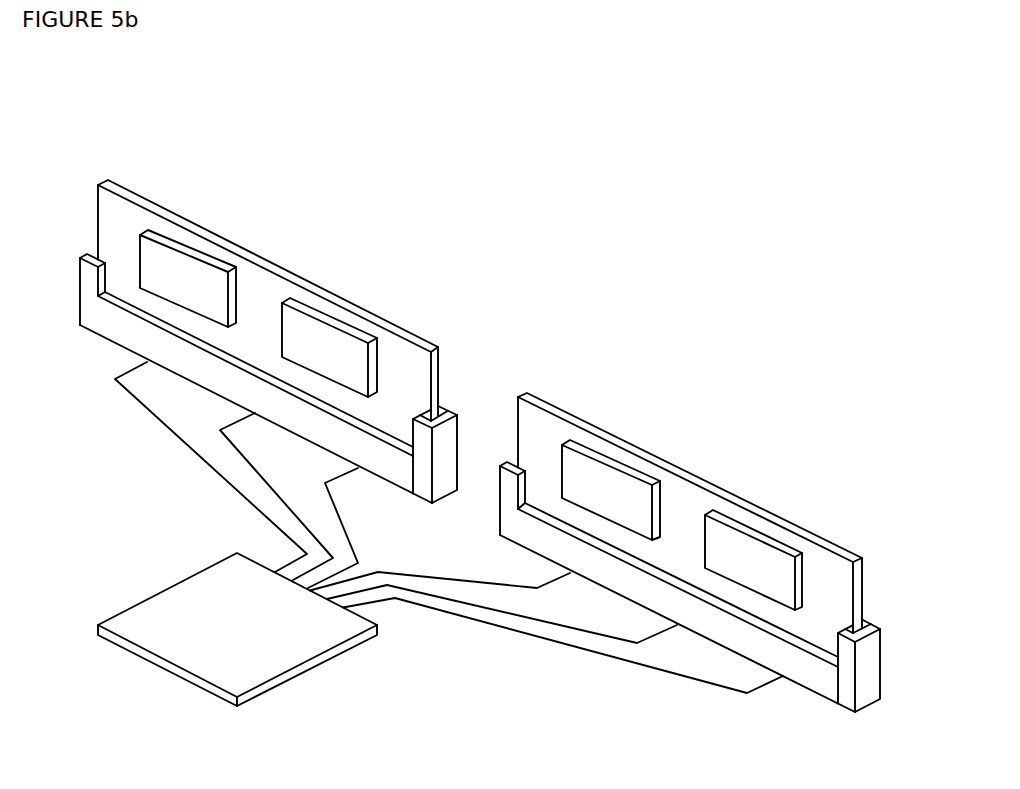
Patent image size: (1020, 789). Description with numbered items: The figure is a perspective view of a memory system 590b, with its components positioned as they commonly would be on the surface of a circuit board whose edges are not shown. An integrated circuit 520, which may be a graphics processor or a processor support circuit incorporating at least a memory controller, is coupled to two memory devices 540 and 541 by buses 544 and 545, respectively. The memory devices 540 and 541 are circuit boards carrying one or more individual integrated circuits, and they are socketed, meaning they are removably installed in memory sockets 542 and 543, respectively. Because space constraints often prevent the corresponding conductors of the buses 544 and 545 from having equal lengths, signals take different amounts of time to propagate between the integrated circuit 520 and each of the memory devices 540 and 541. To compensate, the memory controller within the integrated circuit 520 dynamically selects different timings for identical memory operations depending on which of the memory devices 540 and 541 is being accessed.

The memory system 590b is at (119, 124).
The memory device 540 is at (272, 261).
The memory device 541 is at (695, 476).
The memory socket 542 is at (447, 407).
The memory socket 543 is at (502, 468).
The bus 544 is at (148, 441).
The bus 545 is at (518, 652).
The integrated circuit 520 is at (150, 597).